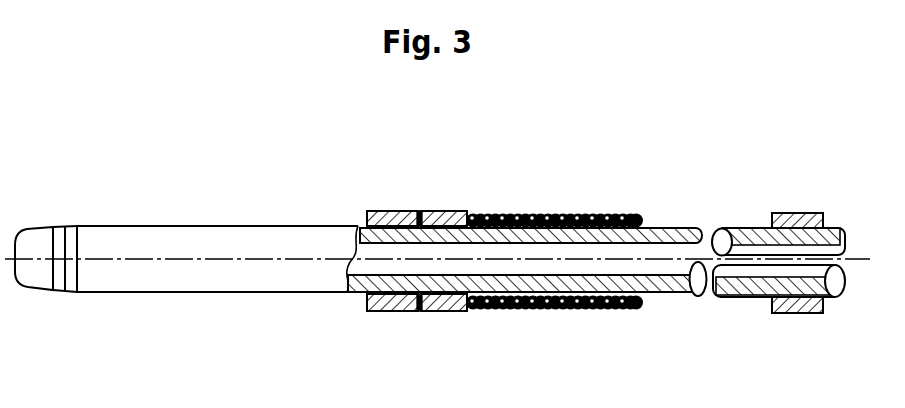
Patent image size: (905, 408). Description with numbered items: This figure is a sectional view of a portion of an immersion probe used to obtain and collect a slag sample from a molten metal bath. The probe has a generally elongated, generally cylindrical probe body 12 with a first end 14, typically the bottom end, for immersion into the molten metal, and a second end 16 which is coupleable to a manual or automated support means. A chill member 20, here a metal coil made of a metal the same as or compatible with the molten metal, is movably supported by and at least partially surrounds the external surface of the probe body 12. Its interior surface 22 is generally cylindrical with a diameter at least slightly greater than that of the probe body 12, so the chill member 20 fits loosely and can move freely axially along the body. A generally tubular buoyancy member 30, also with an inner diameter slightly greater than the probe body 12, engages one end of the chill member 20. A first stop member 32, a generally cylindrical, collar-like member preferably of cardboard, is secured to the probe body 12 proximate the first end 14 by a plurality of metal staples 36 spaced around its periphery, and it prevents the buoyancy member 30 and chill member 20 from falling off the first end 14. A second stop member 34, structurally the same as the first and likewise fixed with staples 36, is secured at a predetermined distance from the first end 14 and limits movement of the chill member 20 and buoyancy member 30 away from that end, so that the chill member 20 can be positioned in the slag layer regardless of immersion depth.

The probe body 12 is at (162, 232).
The first end 14 is at (40, 236).
The second end 16 is at (838, 227).
The chill member 20 is at (568, 213).
The interior surface 22 is at (607, 213).
The buoyancy member 30 is at (440, 211).
The first stop member 32 is at (373, 211).
The second stop member 34 is at (792, 212).
The metal staples 36 is at (372, 312).